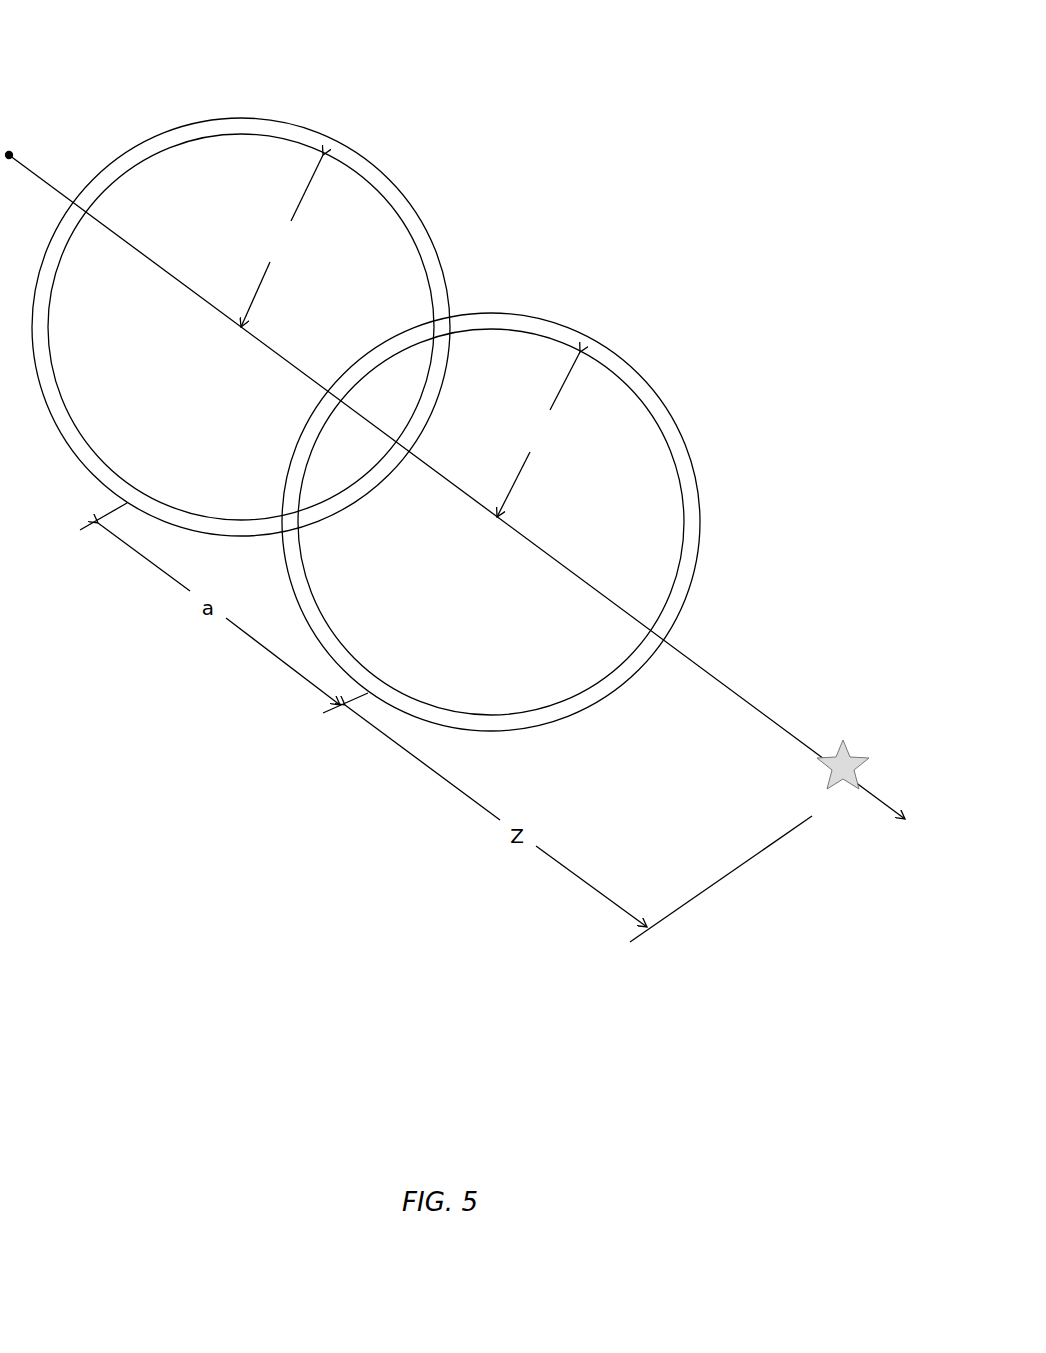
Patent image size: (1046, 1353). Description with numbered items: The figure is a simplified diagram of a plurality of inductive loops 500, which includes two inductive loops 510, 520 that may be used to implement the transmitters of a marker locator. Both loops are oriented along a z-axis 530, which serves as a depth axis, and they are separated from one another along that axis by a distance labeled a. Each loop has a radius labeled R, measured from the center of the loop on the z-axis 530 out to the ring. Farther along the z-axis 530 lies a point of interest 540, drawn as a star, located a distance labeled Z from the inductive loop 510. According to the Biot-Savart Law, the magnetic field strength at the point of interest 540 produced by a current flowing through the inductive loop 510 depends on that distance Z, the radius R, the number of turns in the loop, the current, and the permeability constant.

The plurality of inductive loops 500 is at (99, 52).
The inductive loop 510 is at (663, 393).
The inductive loop 520 is at (393, 175).
The z-axis 530 is at (713, 668).
The point of interest 540 is at (849, 752).